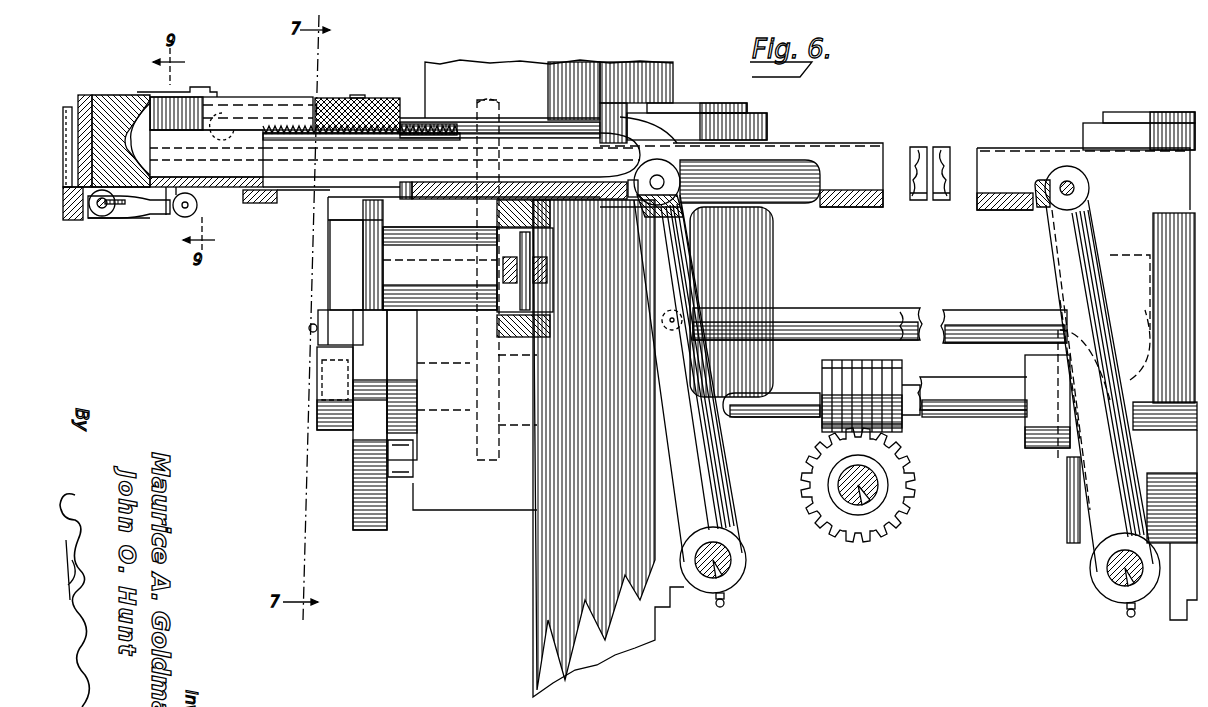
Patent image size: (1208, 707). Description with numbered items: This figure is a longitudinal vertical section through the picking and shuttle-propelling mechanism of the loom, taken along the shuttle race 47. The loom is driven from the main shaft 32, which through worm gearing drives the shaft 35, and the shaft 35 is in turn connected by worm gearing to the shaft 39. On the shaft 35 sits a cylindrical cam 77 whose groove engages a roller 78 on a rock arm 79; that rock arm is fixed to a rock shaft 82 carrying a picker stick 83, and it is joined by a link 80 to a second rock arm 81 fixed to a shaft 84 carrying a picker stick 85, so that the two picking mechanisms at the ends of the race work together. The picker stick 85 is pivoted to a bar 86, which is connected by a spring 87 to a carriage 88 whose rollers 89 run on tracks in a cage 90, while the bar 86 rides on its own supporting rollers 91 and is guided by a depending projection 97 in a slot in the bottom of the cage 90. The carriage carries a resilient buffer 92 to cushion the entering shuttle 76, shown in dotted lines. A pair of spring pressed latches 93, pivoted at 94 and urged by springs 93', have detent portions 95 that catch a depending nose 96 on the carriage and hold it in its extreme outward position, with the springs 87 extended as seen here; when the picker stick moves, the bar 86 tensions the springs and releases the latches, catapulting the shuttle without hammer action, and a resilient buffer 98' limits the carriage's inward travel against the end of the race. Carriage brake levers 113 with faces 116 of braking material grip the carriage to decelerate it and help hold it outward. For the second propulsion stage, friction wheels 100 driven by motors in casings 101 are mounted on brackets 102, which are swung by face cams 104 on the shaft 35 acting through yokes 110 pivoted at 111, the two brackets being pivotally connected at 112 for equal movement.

The main shaft 32 is at (452, 316).
The shaft 35 is at (1000, 427).
The shaft 39 is at (860, 490).
The shuttle race 47 is at (437, 195).
The shuttle 76 is at (402, 98).
The cylindrical cam 77 is at (1070, 512).
The roller 78 is at (1060, 457).
The rock arm 79 is at (1067, 313).
The link 80 is at (863, 315).
The rock arm 81 is at (667, 317).
The rock shaft 82 is at (1113, 577).
The picker stick 83 is at (1060, 262).
The shaft 84 is at (723, 565).
The picker stick 85 is at (687, 277).
The bar 86 is at (297, 178).
The spring 87 is at (447, 127).
The carriage 88 is at (80, 95).
The rollers 89 is at (100, 93).
The cage 90 is at (66, 184).
The supporting rollers 91 is at (64, 150).
The resilient buffer 92 is at (122, 97).
The spring pressed latches 93 is at (129, 221).
The springs 93' is at (119, 244).
The pivot 94 is at (100, 213).
The detent portion 95 is at (195, 197).
The depending nose 96 is at (170, 187).
The depending projection 97 is at (260, 203).
The resilient buffer 98' is at (403, 202).
The friction wheels 100 is at (767, 123).
The casings 101 is at (773, 292).
The bracket 102 is at (407, 253).
The face cams 104 is at (350, 513).
The yoke 110 is at (333, 322).
The pivot 111 is at (338, 258).
The pivotal connection 112 is at (548, 266).
The carriage brake levers 113 is at (252, 102).
The faces of braking material 116 is at (333, 98).